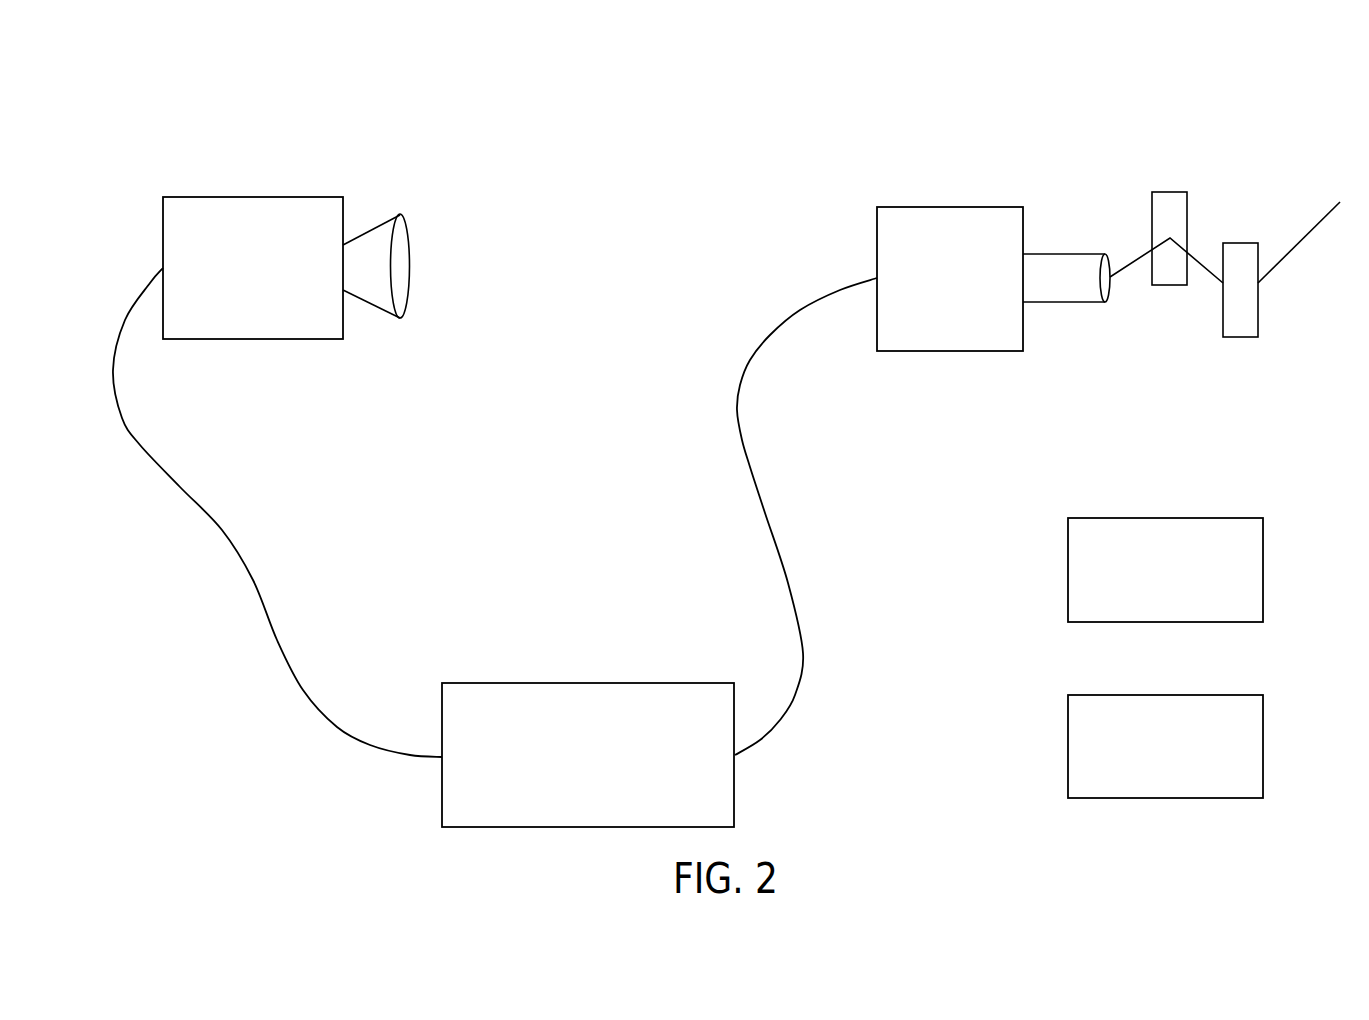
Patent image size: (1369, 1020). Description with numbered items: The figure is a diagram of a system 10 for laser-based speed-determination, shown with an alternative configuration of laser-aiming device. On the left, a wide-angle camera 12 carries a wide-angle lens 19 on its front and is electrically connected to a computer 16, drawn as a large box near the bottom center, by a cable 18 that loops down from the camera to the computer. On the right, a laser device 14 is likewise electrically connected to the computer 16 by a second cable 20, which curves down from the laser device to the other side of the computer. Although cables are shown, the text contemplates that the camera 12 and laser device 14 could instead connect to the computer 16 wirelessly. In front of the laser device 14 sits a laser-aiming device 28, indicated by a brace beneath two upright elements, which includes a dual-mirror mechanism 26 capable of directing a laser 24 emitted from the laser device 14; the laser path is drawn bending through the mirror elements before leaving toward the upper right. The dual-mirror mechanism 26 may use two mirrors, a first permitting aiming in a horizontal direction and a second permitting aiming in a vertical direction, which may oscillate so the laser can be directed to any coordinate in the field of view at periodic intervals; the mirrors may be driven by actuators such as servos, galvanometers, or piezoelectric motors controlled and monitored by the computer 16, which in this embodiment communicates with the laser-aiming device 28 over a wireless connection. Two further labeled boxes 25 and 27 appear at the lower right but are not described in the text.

The system 10 is at (1097, 101).
The wide-angle camera 12 is at (238, 279).
The laser device 14 is at (935, 289).
The computer 16 is at (574, 765).
The cable 18 is at (223, 531).
The wide-angle lens 19 is at (407, 262).
The cable 20 is at (767, 514).
The laser 24 is at (1308, 235).
The processing module 25 is at (1165, 518).
The dual-mirror mechanism 26 is at (1169, 192).
The storage module 27 is at (1165, 695).
The laser-aiming device 28 is at (1199, 269).